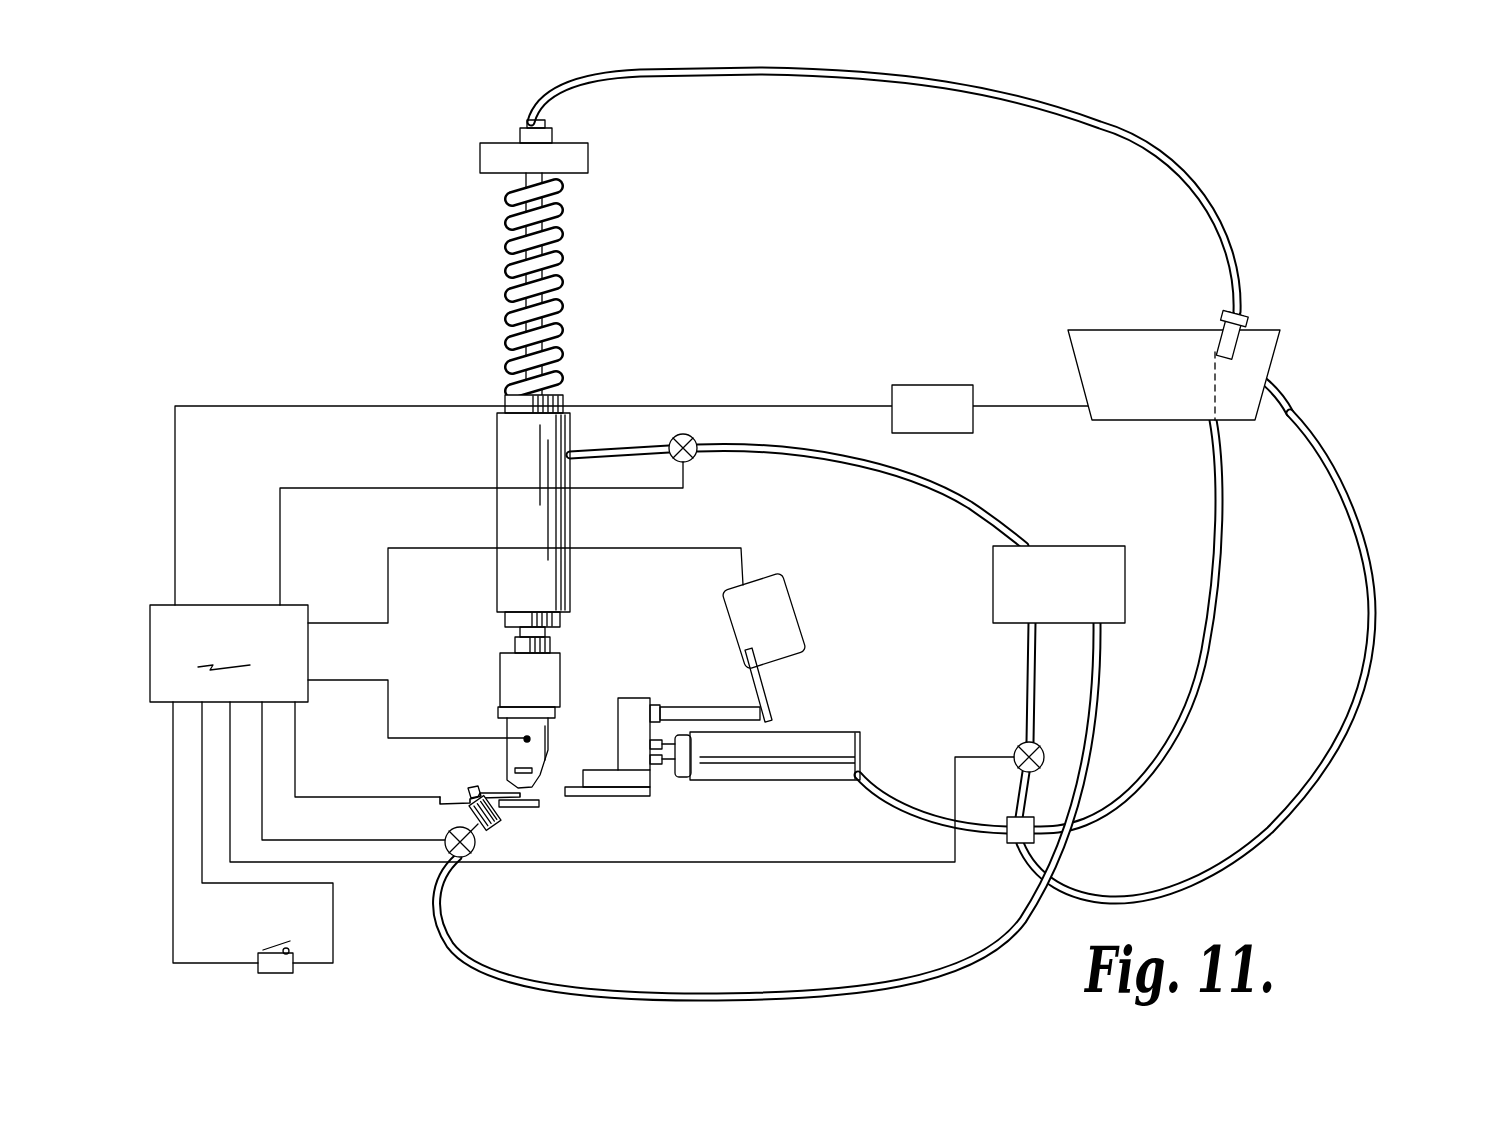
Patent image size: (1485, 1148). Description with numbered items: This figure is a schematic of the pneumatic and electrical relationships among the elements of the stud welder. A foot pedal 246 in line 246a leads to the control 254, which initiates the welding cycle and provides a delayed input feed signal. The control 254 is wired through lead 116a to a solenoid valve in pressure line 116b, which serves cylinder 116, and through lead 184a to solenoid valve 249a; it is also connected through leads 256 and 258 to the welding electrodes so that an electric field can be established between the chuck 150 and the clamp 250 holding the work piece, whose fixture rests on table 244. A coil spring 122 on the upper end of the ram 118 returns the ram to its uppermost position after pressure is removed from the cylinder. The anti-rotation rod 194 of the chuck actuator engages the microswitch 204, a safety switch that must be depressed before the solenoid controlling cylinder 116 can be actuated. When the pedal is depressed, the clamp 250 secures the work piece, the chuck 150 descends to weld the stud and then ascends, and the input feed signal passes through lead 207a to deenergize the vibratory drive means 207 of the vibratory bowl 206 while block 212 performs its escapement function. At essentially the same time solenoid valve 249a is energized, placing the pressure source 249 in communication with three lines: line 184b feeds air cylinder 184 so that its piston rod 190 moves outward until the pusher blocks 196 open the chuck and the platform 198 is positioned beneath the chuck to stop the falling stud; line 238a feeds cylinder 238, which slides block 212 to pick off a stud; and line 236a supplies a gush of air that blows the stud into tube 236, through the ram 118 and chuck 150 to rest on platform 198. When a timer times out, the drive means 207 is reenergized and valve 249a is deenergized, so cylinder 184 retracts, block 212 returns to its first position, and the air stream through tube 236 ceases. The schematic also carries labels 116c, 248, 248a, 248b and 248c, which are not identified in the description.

The tube 236 is at (924, 78).
The coil spring 122 is at (505, 250).
The ram 118 is at (542, 293).
The lead 207a is at (366, 405).
The valve 116c is at (693, 440).
The pressure line 116b is at (829, 496).
The vibratory drive means 207 is at (938, 423).
The vibratory bowl 206 is at (1148, 422).
The block 212 is at (1240, 313).
The cylinder 238 is at (1254, 357).
The line 238a is at (1350, 500).
The line 236a is at (1216, 624).
The lead 116a is at (280, 530).
The cylinder 116 is at (497, 522).
The control 254 is at (229, 653).
The lead 256 is at (426, 739).
The chuck 150 is at (540, 750).
The microswitch 204 is at (798, 642).
The pressure source 249 is at (996, 602).
The anti-rotation rod member 194 is at (715, 712).
The pusher blocks 196 is at (598, 775).
The piston rod 190 is at (669, 758).
The cylinder 184 is at (810, 776).
The line 184b is at (925, 802).
The lead 184a is at (776, 860).
The solenoid valve 249a is at (1015, 748).
The platform 198 is at (602, 800).
The table 244 is at (527, 807).
The valve 248 is at (493, 828).
The valve 248c is at (470, 858).
The clamp 250 is at (503, 793).
The lead 258 is at (345, 797).
The electrical line 248a is at (394, 848).
The line 246a is at (170, 876).
The foot pedal 246 is at (283, 978).
The conduit 248b is at (713, 990).